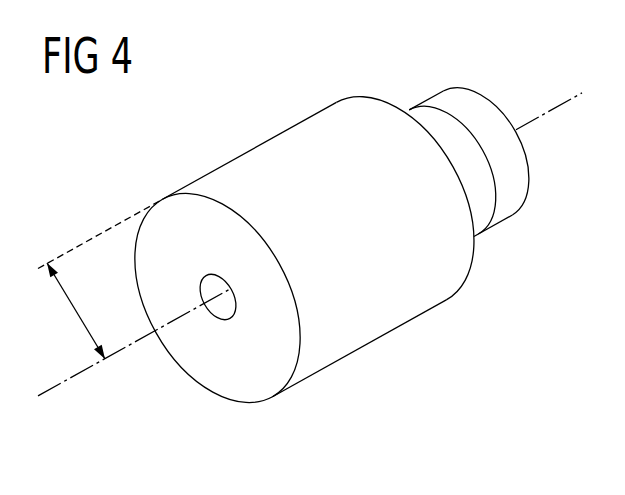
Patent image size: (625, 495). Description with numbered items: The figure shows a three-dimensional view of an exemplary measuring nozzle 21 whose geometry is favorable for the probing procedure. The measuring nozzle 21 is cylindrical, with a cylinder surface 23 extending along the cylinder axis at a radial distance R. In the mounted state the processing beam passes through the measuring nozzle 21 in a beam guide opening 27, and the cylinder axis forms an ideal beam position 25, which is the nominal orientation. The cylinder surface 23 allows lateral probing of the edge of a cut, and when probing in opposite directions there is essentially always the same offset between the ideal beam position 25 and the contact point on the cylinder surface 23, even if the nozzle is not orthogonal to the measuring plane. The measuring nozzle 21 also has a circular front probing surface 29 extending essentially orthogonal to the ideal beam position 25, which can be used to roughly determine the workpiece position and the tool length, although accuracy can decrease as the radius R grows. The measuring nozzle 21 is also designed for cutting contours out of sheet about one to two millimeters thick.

The measuring nozzle 21 is at (307, 256).
The cylinder surface 23 is at (318, 113).
The ideal beam position 25 is at (64, 386).
The beam guide opening 27 is at (190, 330).
The front probing surface 29 is at (247, 392).
The radius R is at (73, 307).